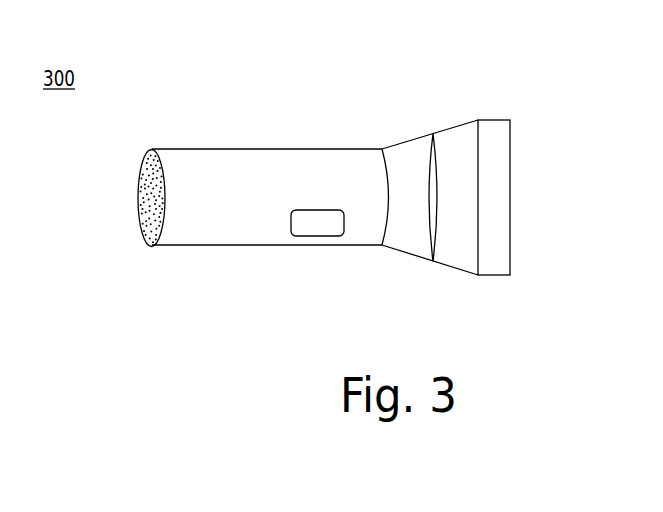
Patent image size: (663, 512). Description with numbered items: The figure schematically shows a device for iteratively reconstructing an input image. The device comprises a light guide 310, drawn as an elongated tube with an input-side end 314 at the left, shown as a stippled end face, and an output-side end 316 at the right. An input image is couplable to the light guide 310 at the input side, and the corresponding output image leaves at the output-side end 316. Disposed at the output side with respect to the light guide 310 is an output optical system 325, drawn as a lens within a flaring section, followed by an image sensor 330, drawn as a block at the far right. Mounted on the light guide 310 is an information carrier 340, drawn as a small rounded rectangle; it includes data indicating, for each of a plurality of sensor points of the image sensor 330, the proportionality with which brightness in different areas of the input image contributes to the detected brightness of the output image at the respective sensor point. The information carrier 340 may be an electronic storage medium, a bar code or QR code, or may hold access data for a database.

The light guide 310 is at (235, 149).
The input-side end 314 is at (157, 250).
The output-side end 316 is at (373, 246).
The output optical system 325 is at (433, 133).
The image sensor 330 is at (495, 120).
The information carrier 340 is at (317, 237).